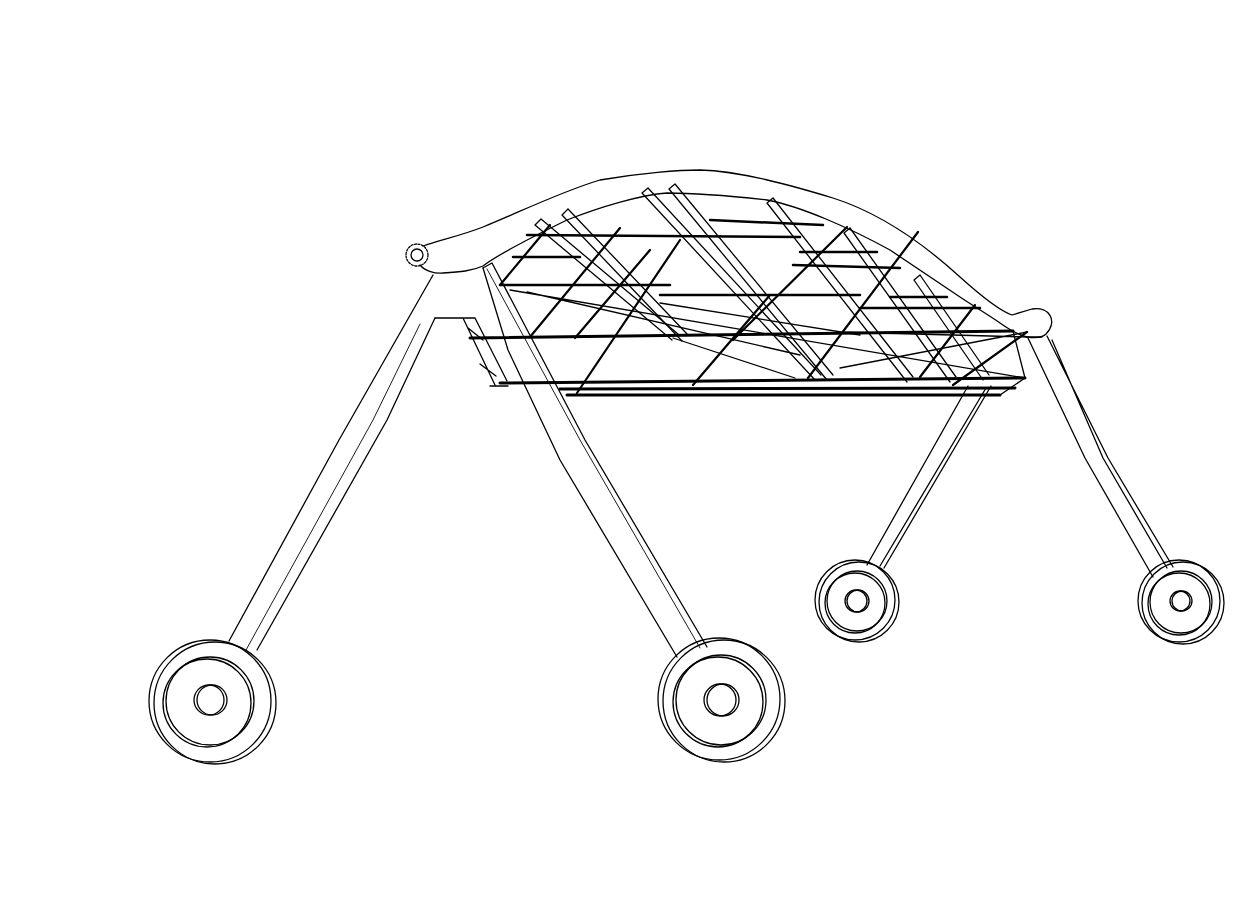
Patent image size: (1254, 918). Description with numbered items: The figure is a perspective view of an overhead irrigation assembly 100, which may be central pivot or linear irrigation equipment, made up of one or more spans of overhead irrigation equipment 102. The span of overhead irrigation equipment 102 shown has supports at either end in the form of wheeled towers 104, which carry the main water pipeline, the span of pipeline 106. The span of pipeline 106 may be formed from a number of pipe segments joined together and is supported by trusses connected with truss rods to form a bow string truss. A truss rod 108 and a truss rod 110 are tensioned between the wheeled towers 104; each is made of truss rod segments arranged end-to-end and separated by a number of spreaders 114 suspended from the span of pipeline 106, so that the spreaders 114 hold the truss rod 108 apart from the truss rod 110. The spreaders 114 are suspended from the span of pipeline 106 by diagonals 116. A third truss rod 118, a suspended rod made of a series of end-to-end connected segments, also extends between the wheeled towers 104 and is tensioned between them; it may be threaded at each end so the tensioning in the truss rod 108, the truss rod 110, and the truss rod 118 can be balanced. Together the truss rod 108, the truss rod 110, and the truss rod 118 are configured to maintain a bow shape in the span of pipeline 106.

The overhead irrigation assembly 100 is at (1040, 118).
The span of overhead irrigation equipment 102 is at (1050, 153).
The wheeled towers 104 is at (338, 505).
The span of pipeline 106 is at (973, 284).
The truss rod 108 is at (476, 365).
The truss rod 110 is at (755, 368).
The spreaders 114 is at (575, 342).
The diagonals 116 is at (601, 233).
The truss rod 118 is at (836, 320).